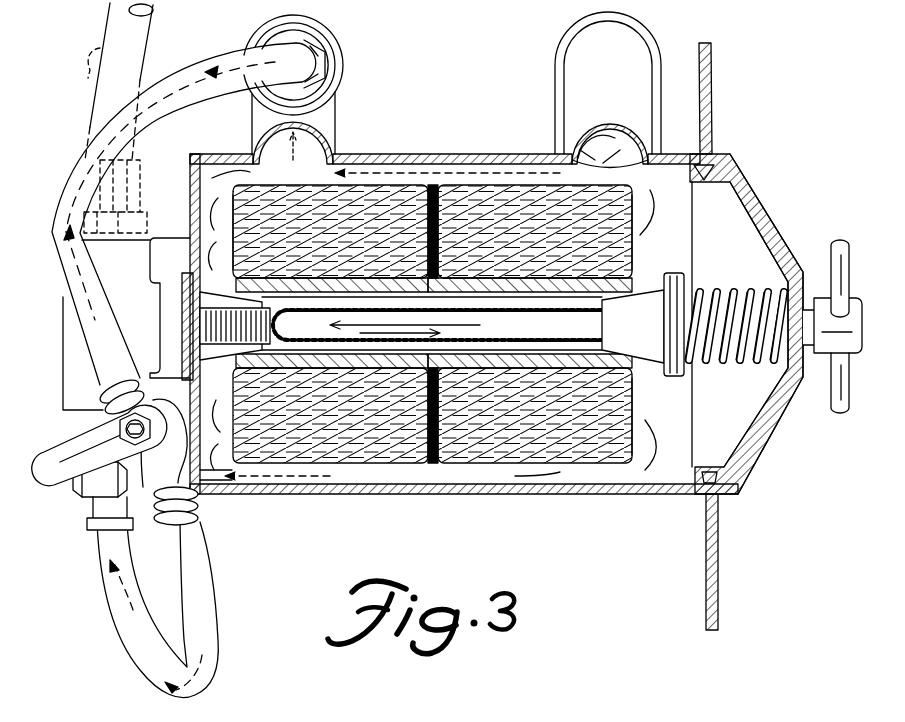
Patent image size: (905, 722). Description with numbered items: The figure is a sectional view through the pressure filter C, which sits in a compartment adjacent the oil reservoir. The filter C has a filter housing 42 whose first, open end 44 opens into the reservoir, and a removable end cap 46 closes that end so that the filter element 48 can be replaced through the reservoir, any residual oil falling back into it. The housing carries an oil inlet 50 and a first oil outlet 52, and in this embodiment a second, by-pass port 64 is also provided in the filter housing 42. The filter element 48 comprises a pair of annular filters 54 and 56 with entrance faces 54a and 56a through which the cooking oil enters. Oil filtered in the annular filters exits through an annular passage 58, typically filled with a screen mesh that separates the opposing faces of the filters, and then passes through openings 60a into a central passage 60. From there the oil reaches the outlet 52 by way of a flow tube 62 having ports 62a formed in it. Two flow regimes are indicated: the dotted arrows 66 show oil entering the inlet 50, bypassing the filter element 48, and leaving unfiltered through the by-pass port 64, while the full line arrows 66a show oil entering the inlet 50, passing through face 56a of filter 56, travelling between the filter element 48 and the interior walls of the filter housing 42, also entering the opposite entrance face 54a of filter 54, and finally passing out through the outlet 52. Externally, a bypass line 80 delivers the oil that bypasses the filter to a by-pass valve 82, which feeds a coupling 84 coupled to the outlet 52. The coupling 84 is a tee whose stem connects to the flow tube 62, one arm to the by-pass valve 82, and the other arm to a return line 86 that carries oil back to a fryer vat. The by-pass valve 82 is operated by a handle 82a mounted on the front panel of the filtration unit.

The filter housing 42 is at (552, 156).
The first, open end 44 is at (692, 240).
The removable end cap 46 is at (788, 222).
The filter element 48 is at (648, 427).
The oil inlet 50 is at (618, 96).
The first oil outlet 52 is at (192, 255).
The annular filter 54 is at (286, 494).
The entrance face 54a is at (212, 200).
The annular filter 56 is at (550, 494).
The entrance face 56a is at (648, 397).
The annular passage 58 is at (436, 494).
The central passage 60 is at (366, 270).
The openings 60a is at (506, 250).
The flow tube 62 is at (636, 258).
The ports 62a is at (606, 325).
The by-pass port 64 is at (334, 112).
The dotted arrows 66 is at (350, 168).
The full line arrows 66a is at (655, 158).
The bypass line 80 is at (232, 50).
The by-pass valve 82 is at (160, 390).
The handle 82a is at (88, 524).
The coupling 84 is at (122, 276).
The return line 86 is at (82, 75).
The pressure filter C is at (750, 126).